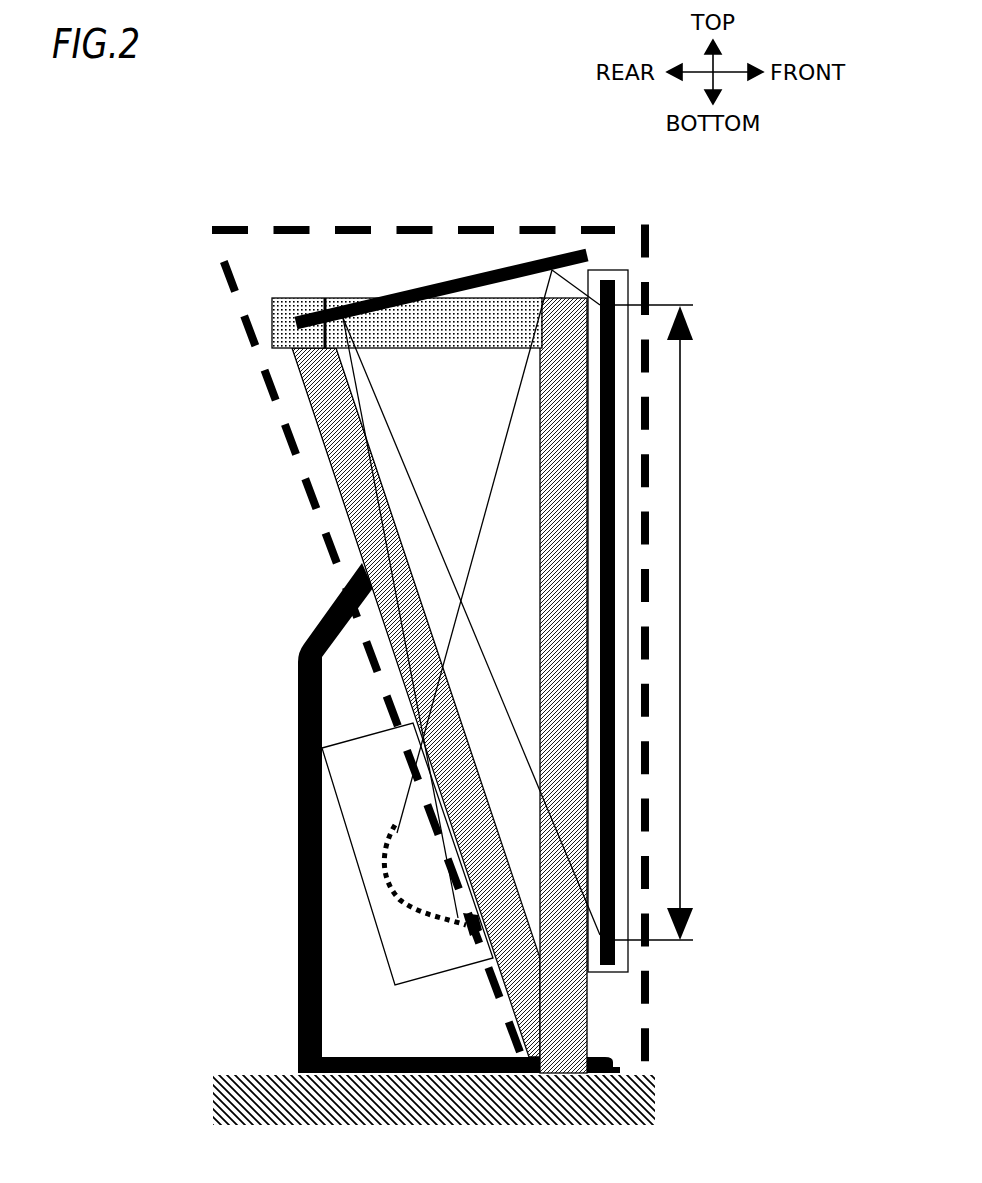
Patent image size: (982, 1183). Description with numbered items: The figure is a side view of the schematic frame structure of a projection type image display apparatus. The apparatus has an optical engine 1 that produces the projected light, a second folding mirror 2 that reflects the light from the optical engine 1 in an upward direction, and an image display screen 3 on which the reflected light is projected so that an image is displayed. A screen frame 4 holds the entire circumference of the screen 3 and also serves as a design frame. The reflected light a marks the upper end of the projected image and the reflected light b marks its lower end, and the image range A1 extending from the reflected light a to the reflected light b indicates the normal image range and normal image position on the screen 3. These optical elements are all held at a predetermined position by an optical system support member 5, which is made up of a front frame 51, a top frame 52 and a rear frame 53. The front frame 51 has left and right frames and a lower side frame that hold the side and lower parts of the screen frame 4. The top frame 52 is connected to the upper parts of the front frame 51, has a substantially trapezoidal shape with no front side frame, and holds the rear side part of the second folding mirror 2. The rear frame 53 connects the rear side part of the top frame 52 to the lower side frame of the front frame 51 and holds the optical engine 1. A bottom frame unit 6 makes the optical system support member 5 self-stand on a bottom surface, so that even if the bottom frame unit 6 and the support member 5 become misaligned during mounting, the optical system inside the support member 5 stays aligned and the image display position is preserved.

The optical engine 1 is at (355, 862).
The second folding mirror 2 is at (493, 263).
The image display screen 3 is at (615, 330).
The screen frame 4 is at (600, 288).
The optical system support member 5 is at (292, 452).
The front frame 51 is at (577, 425).
The top frame 52 is at (272, 320).
The rear frame 53 is at (340, 493).
The bottom frame unit 6 is at (298, 1010).
The reflected light a is at (588, 262).
The reflected light b is at (592, 925).
The image range A1 is at (669, 622).